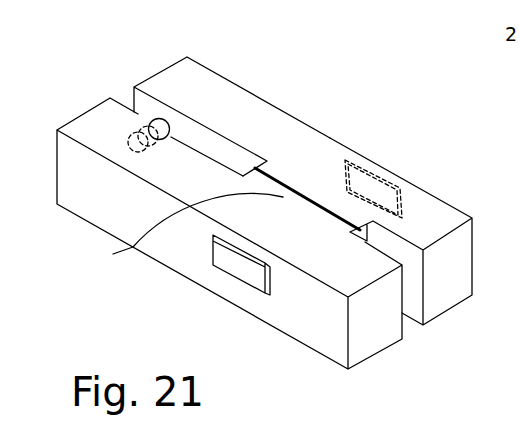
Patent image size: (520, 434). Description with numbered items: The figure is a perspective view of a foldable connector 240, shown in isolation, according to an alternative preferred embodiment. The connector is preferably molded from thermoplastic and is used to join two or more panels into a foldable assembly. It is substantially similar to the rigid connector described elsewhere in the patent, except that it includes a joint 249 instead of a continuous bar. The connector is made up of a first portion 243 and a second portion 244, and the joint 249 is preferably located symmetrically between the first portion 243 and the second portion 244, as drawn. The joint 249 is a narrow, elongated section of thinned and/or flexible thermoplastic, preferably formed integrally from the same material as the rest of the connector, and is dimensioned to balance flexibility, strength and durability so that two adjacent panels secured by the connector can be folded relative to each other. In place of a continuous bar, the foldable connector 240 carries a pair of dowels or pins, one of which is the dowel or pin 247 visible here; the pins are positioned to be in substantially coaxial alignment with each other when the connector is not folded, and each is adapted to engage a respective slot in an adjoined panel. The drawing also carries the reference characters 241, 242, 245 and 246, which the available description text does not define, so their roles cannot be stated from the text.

The foldable connector 240 is at (343, 64).
The first holder unit 241 is at (111, 80).
The second block 242 is at (455, 336).
The first portion 243 is at (62, 161).
The second portion 244 is at (182, 70).
The engagement recess 245 is at (223, 266).
The flexible member 246 is at (278, 176).
The dowel or pin 247 is at (163, 118).
The joint 249 is at (302, 196).